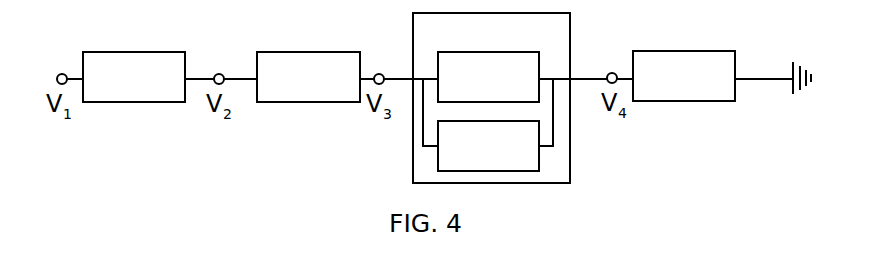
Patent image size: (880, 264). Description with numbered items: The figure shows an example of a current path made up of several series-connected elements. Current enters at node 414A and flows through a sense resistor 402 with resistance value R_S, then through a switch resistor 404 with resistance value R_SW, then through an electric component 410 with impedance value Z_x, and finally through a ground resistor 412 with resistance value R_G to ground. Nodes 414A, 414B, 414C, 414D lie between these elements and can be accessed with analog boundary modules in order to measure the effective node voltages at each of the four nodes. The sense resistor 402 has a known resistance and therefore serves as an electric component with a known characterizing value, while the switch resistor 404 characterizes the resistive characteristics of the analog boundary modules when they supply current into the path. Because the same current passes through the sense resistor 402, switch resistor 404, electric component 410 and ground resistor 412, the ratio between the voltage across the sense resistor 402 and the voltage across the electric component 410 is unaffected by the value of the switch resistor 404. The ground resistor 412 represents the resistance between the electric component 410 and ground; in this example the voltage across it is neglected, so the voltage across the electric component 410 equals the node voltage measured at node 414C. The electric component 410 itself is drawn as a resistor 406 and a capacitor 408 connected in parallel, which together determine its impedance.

The sense resistor 402 is at (180, 80).
The switch resistor 404 is at (353, 80).
The resistor 406 is at (535, 80).
The capacitor 408 is at (535, 149).
The electric component 410 is at (562, 48).
The ground resistor 412 is at (730, 79).
The node 414A is at (62, 74).
The node 414B is at (219, 74).
The node 414C is at (379, 74).
The node 414D is at (612, 73).